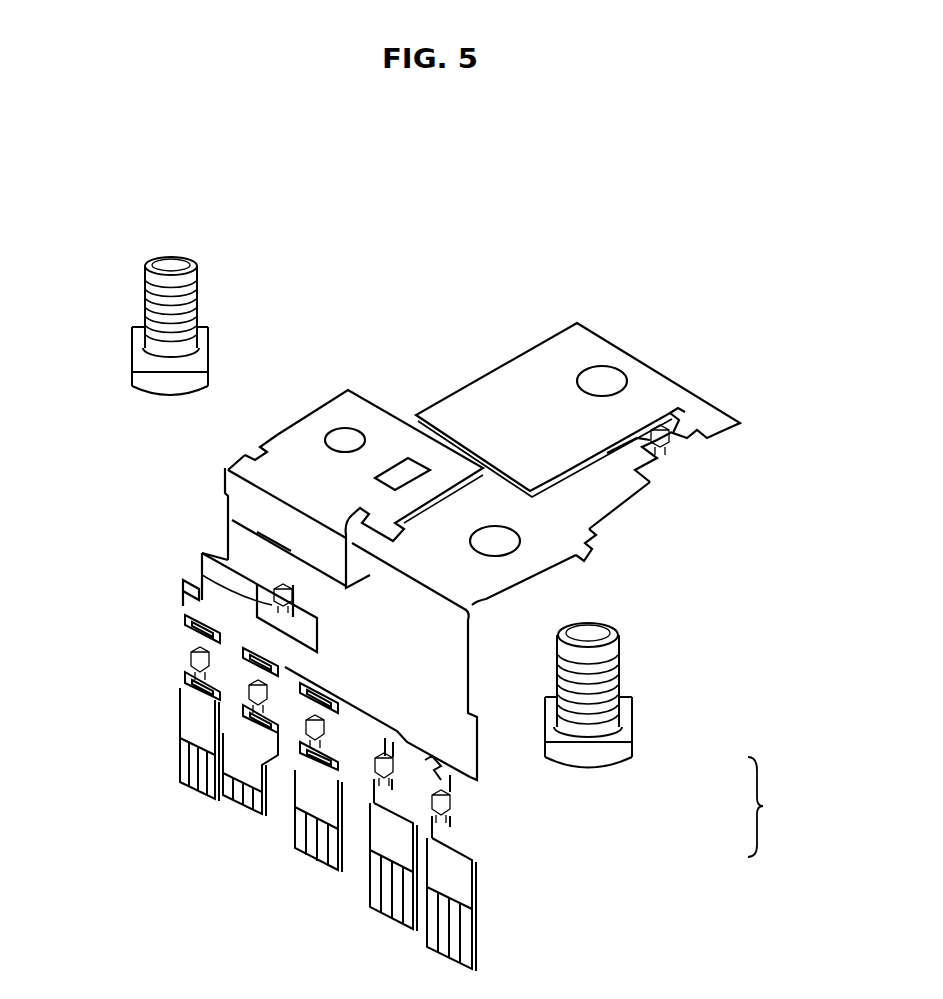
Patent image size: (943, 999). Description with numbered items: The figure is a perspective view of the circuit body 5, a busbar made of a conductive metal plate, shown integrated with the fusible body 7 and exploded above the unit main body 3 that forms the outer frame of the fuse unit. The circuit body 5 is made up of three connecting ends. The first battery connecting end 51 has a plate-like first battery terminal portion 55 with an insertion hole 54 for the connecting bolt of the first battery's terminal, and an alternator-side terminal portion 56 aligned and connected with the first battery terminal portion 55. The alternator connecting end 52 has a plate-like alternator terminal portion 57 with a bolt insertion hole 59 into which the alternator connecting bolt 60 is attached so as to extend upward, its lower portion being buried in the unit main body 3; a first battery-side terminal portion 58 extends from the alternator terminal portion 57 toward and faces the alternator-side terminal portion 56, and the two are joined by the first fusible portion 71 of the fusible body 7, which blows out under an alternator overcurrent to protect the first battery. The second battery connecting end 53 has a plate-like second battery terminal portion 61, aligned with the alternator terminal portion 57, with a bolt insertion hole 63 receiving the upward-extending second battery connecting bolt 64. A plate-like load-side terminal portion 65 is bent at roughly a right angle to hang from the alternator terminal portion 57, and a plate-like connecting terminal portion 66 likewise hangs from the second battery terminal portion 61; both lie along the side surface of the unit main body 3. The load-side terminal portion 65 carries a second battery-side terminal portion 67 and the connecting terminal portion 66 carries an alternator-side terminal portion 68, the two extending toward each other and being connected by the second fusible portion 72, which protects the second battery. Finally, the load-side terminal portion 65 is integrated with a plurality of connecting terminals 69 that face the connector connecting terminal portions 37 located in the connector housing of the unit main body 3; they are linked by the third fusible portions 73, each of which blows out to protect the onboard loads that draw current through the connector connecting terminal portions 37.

The unit main body 3 is at (458, 327).
The circuit body 5 is at (746, 807).
The fusible body 7 is at (742, 490).
The connector connecting terminal portions 37 is at (185, 770).
The first battery connecting end 51 is at (596, 308).
The alternator connecting end 52 is at (603, 572).
The second battery connecting end 53 is at (300, 384).
The insertion hole 54 is at (605, 385).
The first battery terminal portion 55 is at (570, 350).
The alternator-side terminal portion 56 is at (690, 437).
The alternator terminal portion 57 is at (555, 557).
The first battery-side terminal portion 58 is at (648, 462).
The bolt insertion hole 59 is at (500, 555).
The alternator connecting bolt 60 is at (620, 672).
The second battery terminal portion 61 is at (288, 448).
The bolt insertion hole 63 is at (352, 443).
The second battery connecting bolt 64 is at (150, 312).
The load-side terminal portion 65 is at (468, 757).
The connecting terminal portion 66 is at (235, 525).
The second battery-side terminal portion 67 is at (188, 603).
The alternator-side terminal portion 68 is at (245, 577).
The connecting terminals 69 is at (458, 812).
The first fusible portion 71 is at (665, 445).
The second fusible portion 72 is at (290, 585).
The third fusible portions 73 is at (455, 830).